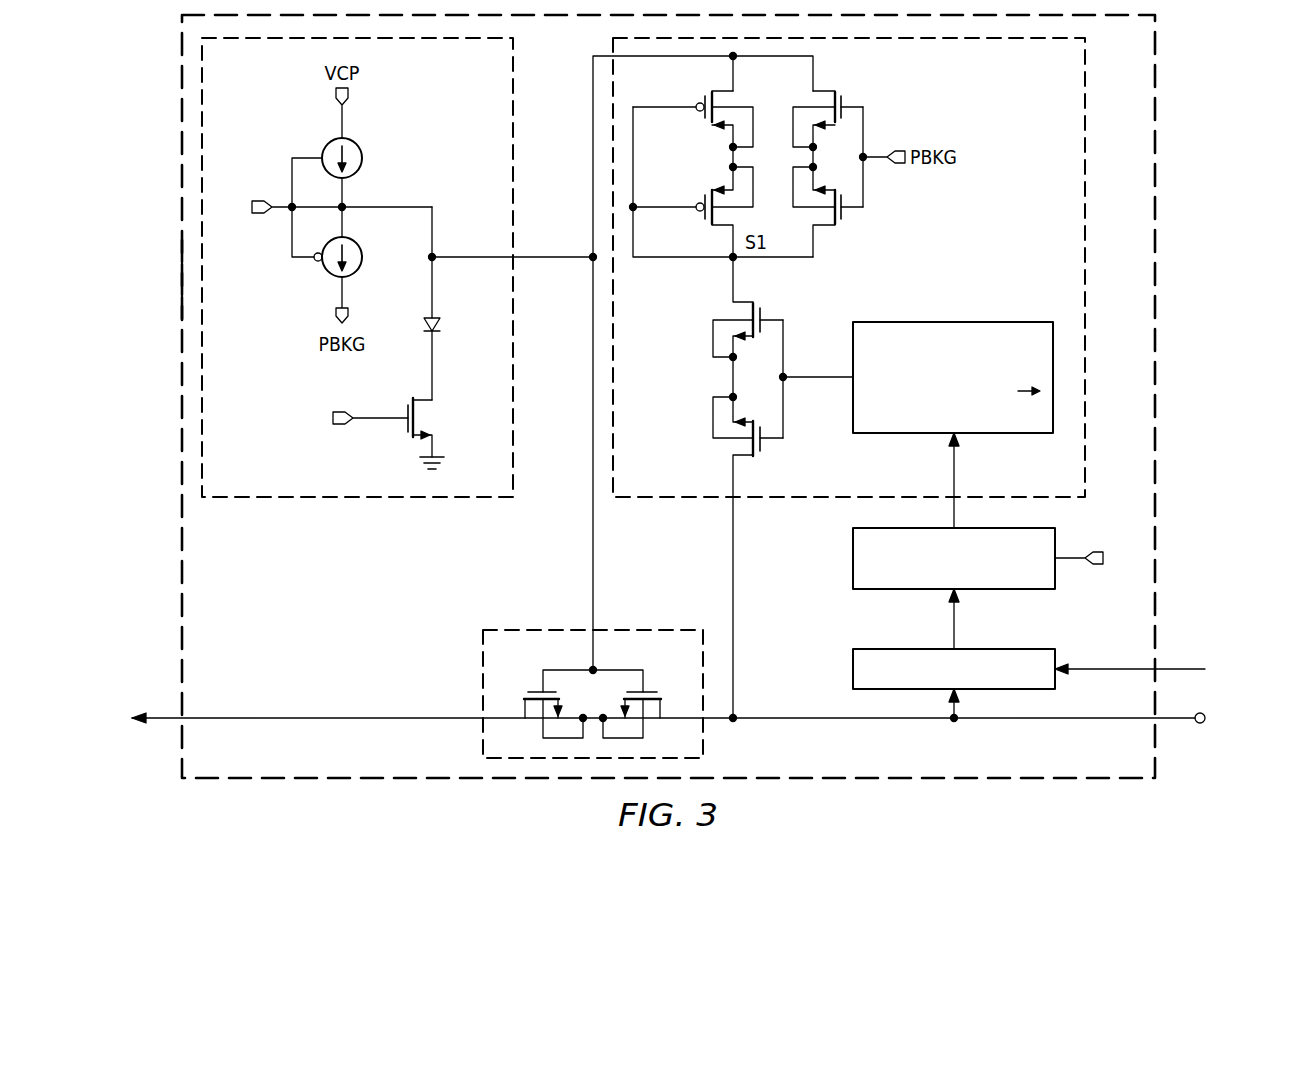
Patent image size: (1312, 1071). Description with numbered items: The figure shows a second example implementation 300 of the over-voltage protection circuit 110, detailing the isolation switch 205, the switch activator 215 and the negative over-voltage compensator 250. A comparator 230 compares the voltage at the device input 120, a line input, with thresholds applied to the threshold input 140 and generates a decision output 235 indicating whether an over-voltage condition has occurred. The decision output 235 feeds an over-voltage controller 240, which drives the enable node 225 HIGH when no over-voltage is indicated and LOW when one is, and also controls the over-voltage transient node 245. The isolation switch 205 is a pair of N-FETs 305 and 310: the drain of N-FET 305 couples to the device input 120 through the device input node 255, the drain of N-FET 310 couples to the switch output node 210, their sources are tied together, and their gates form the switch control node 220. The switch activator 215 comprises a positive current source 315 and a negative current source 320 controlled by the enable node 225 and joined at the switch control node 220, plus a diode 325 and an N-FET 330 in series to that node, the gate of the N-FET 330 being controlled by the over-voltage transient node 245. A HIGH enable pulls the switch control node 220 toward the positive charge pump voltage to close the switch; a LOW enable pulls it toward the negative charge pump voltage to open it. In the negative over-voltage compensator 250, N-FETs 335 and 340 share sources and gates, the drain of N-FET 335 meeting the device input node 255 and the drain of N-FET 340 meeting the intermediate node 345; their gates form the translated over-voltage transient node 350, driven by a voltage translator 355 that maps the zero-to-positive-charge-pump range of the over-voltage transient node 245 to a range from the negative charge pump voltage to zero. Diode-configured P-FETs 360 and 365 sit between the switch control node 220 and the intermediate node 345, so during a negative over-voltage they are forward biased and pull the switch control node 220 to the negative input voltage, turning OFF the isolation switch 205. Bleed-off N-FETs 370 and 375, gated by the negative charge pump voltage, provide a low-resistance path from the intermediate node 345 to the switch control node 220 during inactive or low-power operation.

The second example implementation 300 is at (126, 133).
The over-voltage protection circuit 110 is at (182, 286).
The enable node 225 is at (257, 200).
The positive current source 315 is at (328, 138).
The negative current source 320 is at (330, 275).
The diode 325 is at (445, 331).
The N-FET 330 is at (406, 401).
The over-voltage transient node 245 is at (347, 430).
The switch activator 215 is at (358, 498).
The switch control node 220 is at (589, 264).
The P-FET 360 is at (702, 93).
The P-FET 365 is at (703, 220).
The bleed-off N-FET 370 is at (844, 93).
The bleed-off N-FET 375 is at (843, 220).
The intermediate node 345 is at (730, 266).
The N-FET 340 is at (766, 305).
The N-FET 335 is at (766, 452).
The translated over-voltage transient node 350 is at (808, 383).
The voltage translator 355 is at (962, 320).
The negative over-voltage compensator 250 is at (668, 498).
The over-voltage controller 240 is at (850, 565).
The decision output 235 is at (952, 612).
The comparator 230 is at (850, 675).
The threshold input 140 is at (1180, 667).
The device input 120 is at (1172, 722).
The device input node 255 is at (742, 725).
The isolation switch 205 is at (481, 673).
The N-FET 310 is at (528, 690).
The N-FET 305 is at (648, 690).
The switch output node 210 is at (158, 725).